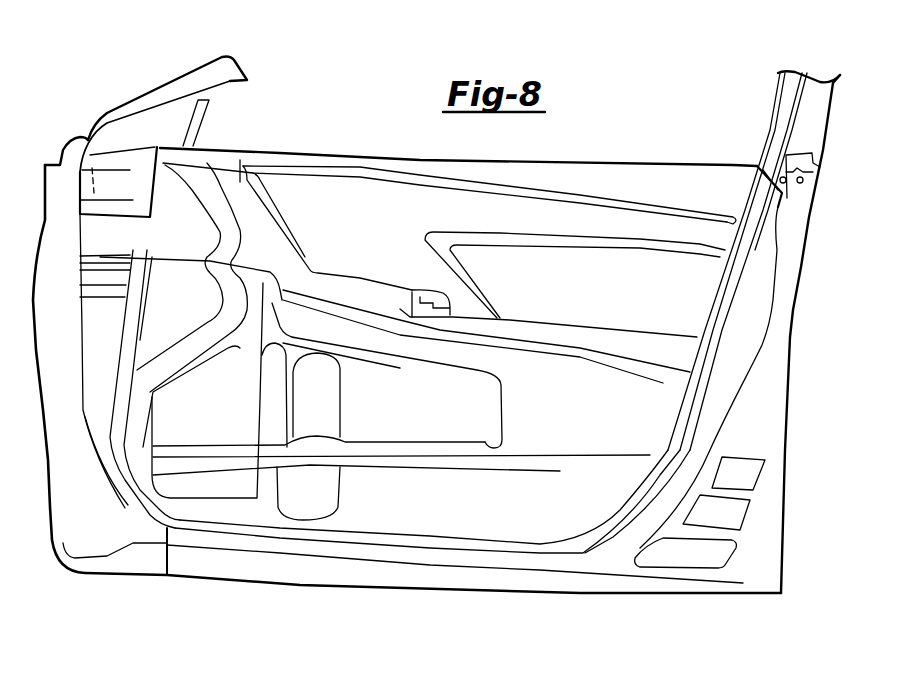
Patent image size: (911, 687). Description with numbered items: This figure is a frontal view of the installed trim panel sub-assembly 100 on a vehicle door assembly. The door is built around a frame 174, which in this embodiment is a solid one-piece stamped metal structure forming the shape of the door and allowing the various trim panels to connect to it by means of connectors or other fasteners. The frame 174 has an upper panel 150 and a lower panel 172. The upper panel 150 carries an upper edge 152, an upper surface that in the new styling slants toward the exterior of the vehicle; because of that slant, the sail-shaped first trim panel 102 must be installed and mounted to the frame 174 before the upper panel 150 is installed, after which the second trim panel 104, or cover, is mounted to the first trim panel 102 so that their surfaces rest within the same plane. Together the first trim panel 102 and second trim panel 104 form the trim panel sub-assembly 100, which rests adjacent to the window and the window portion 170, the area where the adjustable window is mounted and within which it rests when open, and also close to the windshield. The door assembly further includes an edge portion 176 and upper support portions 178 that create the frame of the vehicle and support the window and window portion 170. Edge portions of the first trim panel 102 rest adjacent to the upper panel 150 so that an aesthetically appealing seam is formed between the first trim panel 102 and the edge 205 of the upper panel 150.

The trim panel sub-assembly 100 is at (71, 127).
The first trim panel 102 is at (143, 148).
The second trim panel 104 is at (100, 208).
The upper panel 150 is at (240, 153).
The upper edge 152 is at (413, 160).
The window portion 170 is at (213, 110).
The lower panel 172 is at (427, 507).
The frame 174 is at (58, 346).
The edge portion 176 is at (790, 338).
The upper support portions 178 is at (812, 108).
The edge of the upper panel 205 is at (133, 213).